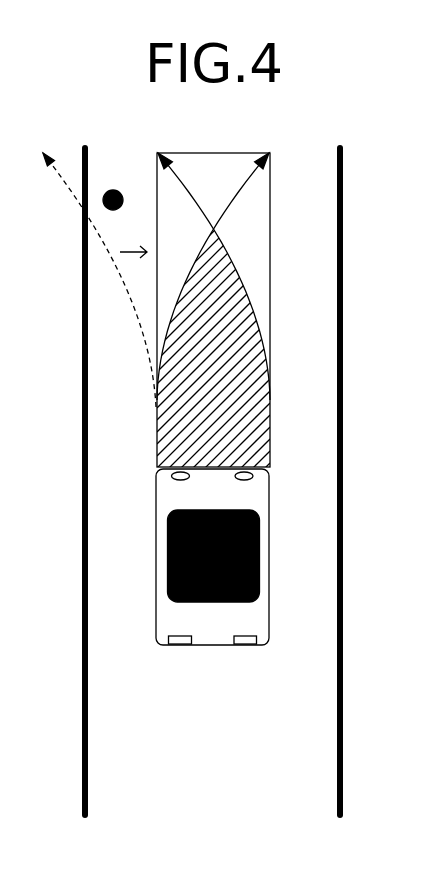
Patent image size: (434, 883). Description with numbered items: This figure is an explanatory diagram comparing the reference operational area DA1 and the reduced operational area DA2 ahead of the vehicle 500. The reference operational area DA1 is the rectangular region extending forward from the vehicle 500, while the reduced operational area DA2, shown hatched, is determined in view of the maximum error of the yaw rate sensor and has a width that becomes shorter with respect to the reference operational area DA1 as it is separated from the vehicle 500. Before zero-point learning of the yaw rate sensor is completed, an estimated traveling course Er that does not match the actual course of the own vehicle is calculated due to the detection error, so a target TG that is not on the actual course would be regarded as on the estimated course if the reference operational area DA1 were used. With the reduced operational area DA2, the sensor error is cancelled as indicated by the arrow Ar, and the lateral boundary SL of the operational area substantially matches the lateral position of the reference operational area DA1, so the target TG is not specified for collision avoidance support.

The boundary in a lateral direction of the operational area SL is at (156, 157).
The target TG is at (116, 190).
The arrow Ar is at (127, 250).
The estimated traveling course Er is at (130, 303).
The reference operational area DA1 is at (233, 190).
The reduced operational area DA2 is at (232, 422).
The vehicle 500 is at (204, 633).